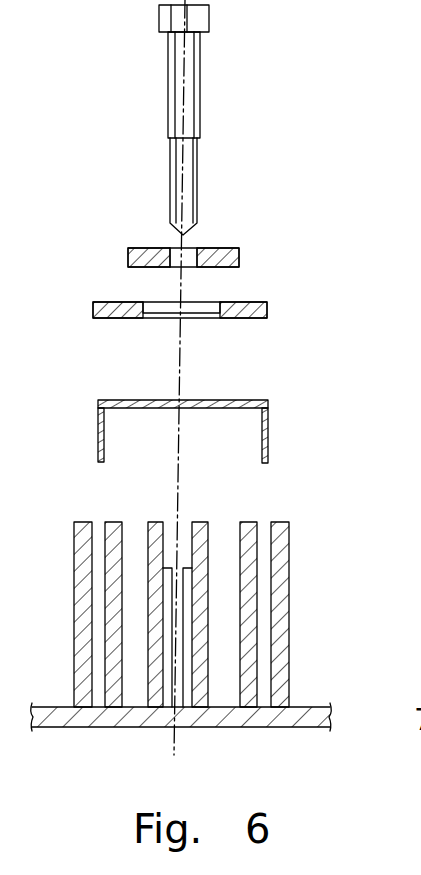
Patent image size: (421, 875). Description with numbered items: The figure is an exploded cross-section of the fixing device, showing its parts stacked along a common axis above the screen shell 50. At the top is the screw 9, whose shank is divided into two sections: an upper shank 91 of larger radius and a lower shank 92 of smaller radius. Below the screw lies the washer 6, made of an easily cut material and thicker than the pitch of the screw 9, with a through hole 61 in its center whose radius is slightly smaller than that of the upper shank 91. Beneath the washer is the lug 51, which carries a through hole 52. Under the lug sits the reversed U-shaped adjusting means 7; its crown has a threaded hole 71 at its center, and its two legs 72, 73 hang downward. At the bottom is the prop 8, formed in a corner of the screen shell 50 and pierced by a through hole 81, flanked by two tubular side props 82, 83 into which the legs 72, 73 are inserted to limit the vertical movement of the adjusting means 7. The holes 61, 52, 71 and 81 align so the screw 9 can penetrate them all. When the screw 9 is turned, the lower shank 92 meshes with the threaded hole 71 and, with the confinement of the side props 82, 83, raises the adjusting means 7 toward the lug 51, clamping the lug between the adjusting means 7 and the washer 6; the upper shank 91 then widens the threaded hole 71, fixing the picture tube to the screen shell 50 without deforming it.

The screw 9 is at (186, 120).
The upper shank 91 is at (175, 60).
The lower shank 92 is at (172, 170).
The washer 6 is at (191, 235).
The through hole 61 is at (178, 248).
The lug 51 is at (206, 329).
The through hole 52 is at (222, 316).
The adjusting means 7 is at (177, 415).
The threaded hole 71 is at (175, 408).
The leg 72 is at (98, 438).
The leg 73 is at (268, 449).
The prop 8 is at (192, 629).
The through hole 81 is at (190, 528).
The tubular side prop 82 is at (80, 525).
The tubular side prop 83 is at (275, 527).
The screen shell 50 is at (283, 718).